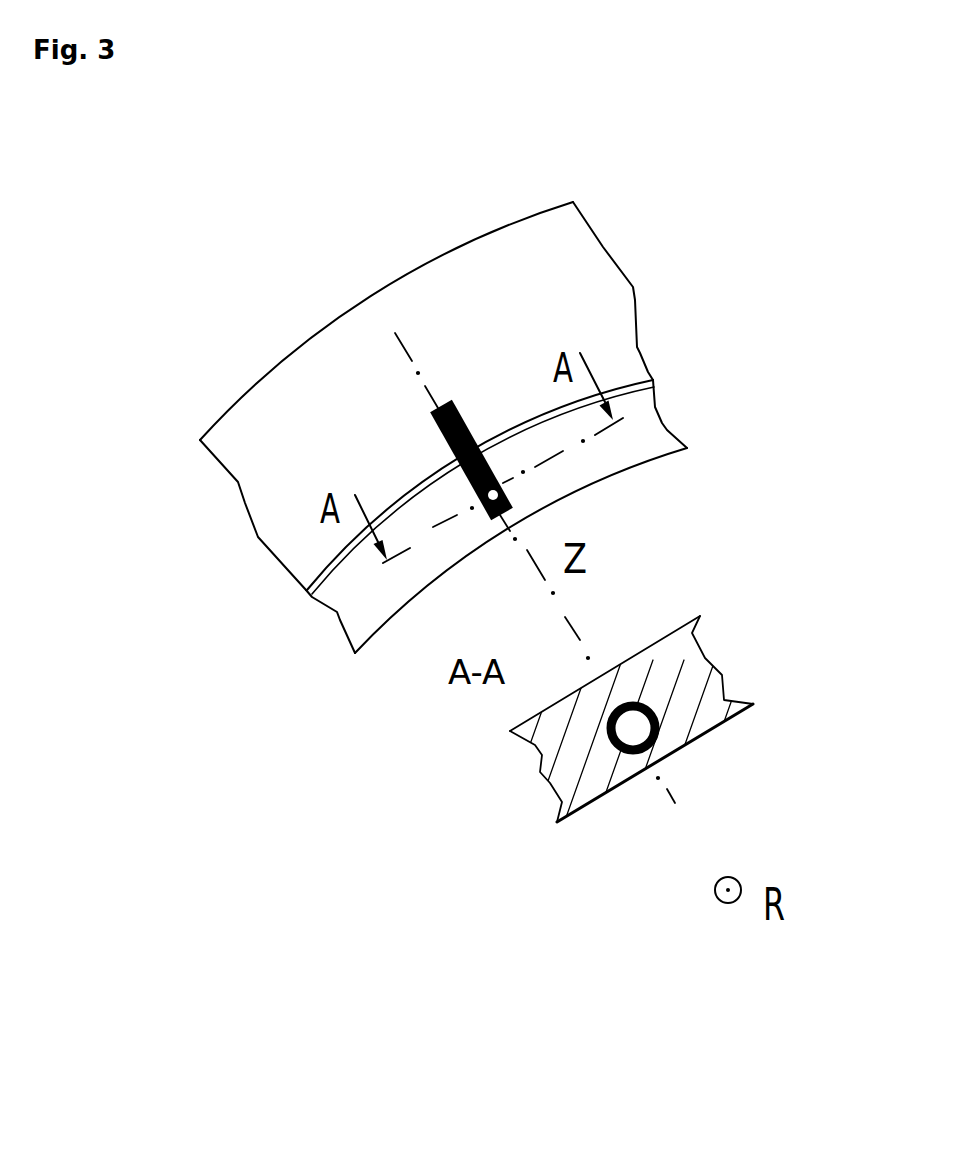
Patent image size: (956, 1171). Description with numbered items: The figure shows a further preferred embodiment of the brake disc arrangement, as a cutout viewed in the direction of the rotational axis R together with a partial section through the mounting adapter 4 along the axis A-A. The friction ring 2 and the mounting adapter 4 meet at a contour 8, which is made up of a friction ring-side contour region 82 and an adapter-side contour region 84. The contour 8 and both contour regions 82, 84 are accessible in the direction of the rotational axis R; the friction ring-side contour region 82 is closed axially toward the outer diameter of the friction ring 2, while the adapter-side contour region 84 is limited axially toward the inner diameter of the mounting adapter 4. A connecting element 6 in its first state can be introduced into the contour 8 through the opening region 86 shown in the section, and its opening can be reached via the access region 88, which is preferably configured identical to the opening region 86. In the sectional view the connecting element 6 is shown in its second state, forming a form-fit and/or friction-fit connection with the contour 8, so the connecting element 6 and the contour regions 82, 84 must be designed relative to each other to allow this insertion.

The friction ring 2 is at (583, 247).
The mounting adapter 4 is at (653, 430).
The connecting element 6 is at (460, 405).
The contour 8 is at (425, 449).
The friction ring-side contour region 82 is at (443, 437).
The adapter-side contour region 84 is at (462, 517).
The opening region 86 is at (631, 839).
The access region 88 is at (650, 788).